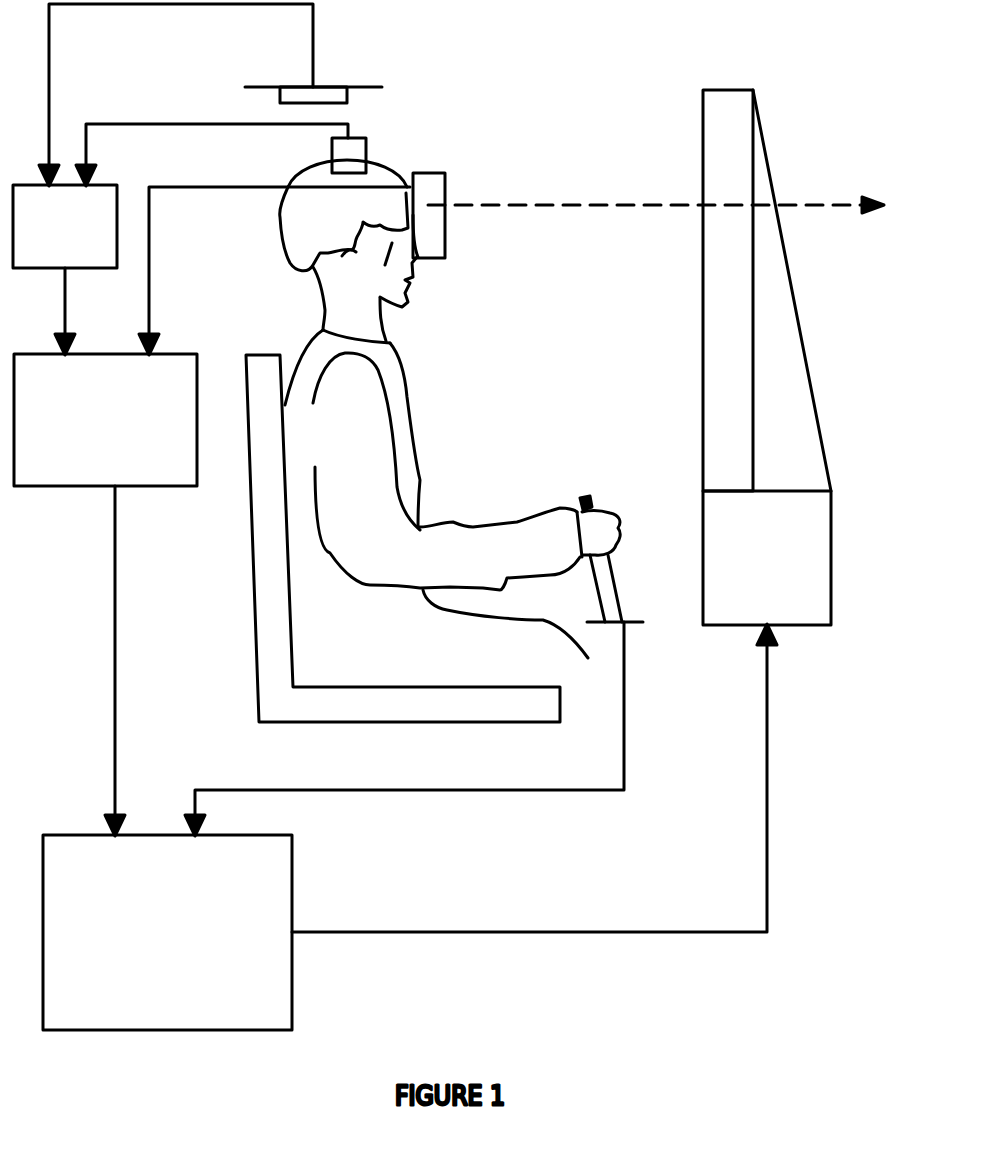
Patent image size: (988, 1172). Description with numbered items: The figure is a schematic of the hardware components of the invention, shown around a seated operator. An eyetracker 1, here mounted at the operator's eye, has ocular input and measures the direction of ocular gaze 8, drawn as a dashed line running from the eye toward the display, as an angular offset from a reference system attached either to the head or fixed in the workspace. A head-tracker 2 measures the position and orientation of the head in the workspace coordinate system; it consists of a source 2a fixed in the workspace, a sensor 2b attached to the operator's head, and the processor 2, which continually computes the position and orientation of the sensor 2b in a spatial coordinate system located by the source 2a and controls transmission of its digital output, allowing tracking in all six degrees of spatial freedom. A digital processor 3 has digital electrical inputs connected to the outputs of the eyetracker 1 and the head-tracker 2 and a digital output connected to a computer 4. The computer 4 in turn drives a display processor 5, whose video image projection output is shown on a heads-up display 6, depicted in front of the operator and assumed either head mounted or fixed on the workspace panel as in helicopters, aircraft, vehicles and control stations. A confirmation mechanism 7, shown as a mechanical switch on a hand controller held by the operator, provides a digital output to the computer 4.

The eyetracker 1 is at (428, 188).
The head-tracker 2 is at (65, 226).
The source 2a is at (313, 87).
The sensor 2b is at (345, 153).
The digital processor 3 is at (105, 420).
The computer 4 is at (167, 932).
The display processor 5 is at (767, 558).
The heads-up display 6 is at (718, 157).
The confirmation mechanism 7 is at (590, 497).
The direction of ocular gaze 8 is at (603, 205).